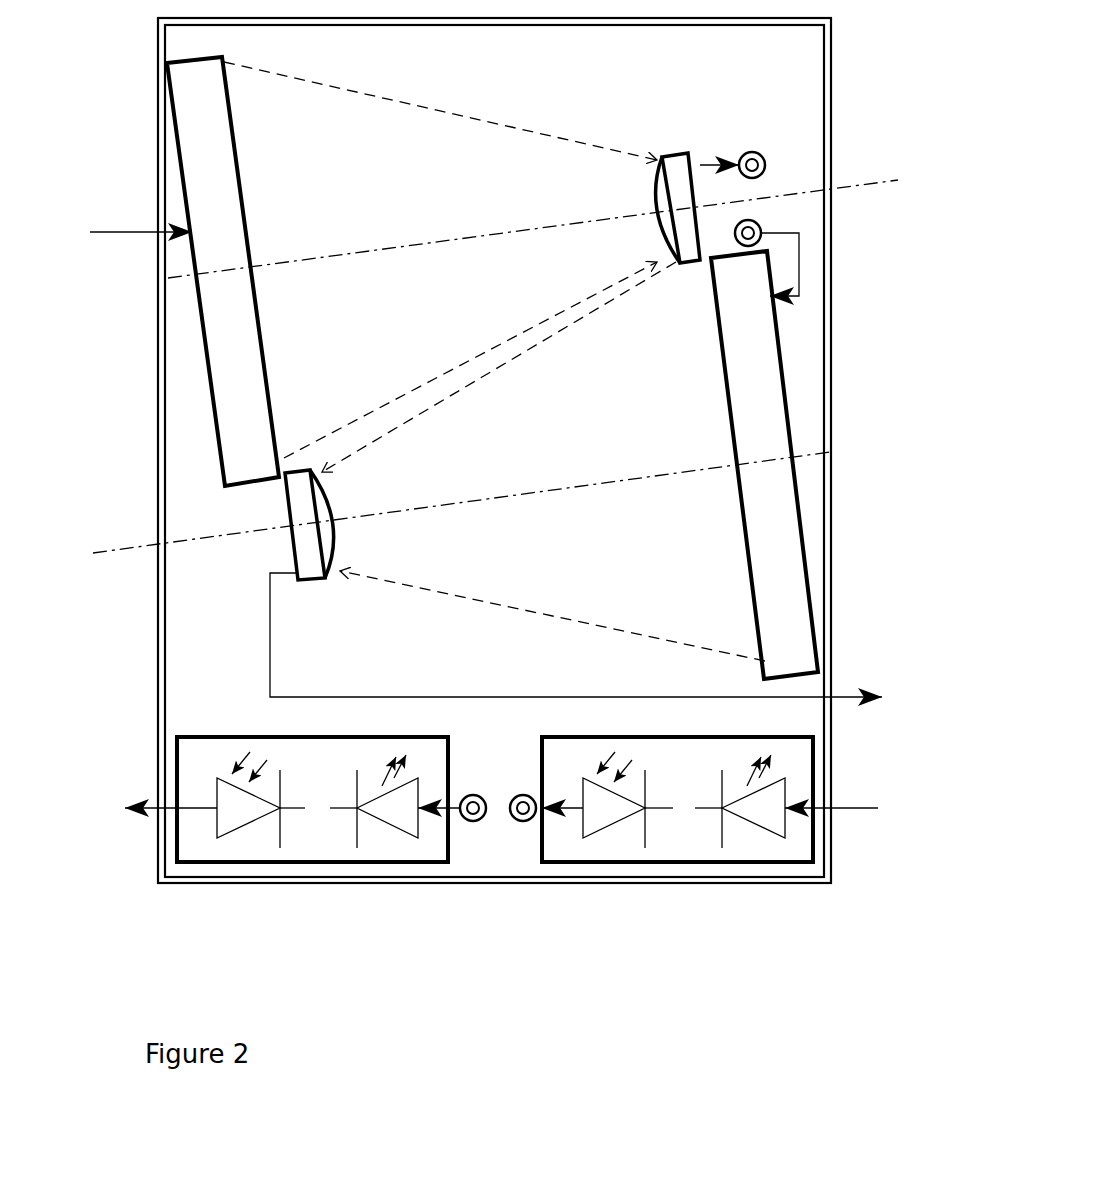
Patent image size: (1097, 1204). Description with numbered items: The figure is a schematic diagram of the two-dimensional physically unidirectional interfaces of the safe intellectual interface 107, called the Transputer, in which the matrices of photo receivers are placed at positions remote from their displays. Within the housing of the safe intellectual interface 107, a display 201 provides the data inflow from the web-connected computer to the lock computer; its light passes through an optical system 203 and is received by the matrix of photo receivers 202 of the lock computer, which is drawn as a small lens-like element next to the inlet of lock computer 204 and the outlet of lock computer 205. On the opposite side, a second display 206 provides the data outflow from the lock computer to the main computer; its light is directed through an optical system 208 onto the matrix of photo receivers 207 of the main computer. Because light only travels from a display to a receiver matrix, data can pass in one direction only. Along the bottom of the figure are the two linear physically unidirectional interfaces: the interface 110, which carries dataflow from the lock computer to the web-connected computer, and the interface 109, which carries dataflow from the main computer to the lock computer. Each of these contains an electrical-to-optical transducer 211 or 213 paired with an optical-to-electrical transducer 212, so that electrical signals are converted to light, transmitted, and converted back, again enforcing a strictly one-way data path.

The safe intellectual interface 107 is at (840, 82).
The linear physically unidirectional interface 109 is at (533, 853).
The linear physically unidirectional interface 110 is at (197, 863).
The display 201 is at (213, 170).
The matrix of photo receivers 202 is at (668, 160).
The optical system 203 is at (657, 222).
The inlet of lock computer 204 is at (778, 155).
The outlet of lock computer 205 is at (774, 222).
The display 206 is at (781, 641).
The matrix of photo receivers 207 is at (307, 566).
The optical system 208 is at (338, 543).
The electrical-to-optical transducer 211 is at (748, 833).
The optical-to-electrical transducer 212 is at (380, 836).
The electrical-to-optical transducer 213 is at (248, 836).